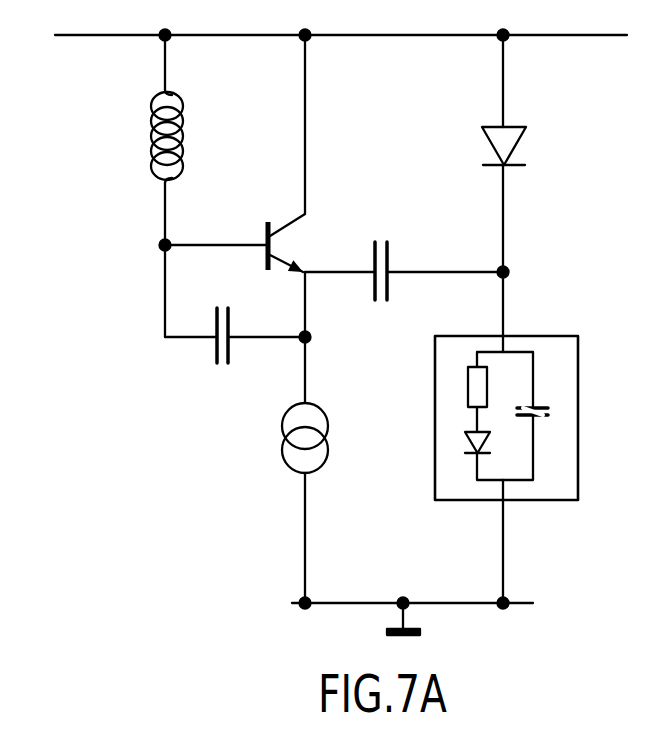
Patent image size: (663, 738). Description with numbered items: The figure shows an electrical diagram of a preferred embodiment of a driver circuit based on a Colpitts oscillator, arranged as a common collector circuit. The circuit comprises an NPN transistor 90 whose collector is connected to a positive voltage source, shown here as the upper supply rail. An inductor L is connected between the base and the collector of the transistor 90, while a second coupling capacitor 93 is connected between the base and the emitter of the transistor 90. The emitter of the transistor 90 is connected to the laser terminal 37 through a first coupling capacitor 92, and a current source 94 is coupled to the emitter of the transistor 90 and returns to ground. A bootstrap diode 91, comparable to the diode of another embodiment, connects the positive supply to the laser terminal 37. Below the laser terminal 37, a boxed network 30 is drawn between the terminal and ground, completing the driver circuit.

The inductor L is at (149, 140).
The NPN transistor 90 is at (297, 186).
The bootstrap diode 91 is at (519, 153).
The first coupling capacitor 92 is at (404, 287).
The second coupling capacitor 93 is at (235, 350).
The current source 94 is at (322, 503).
The laser terminal 37 is at (520, 301).
The protection network 30 is at (579, 428).